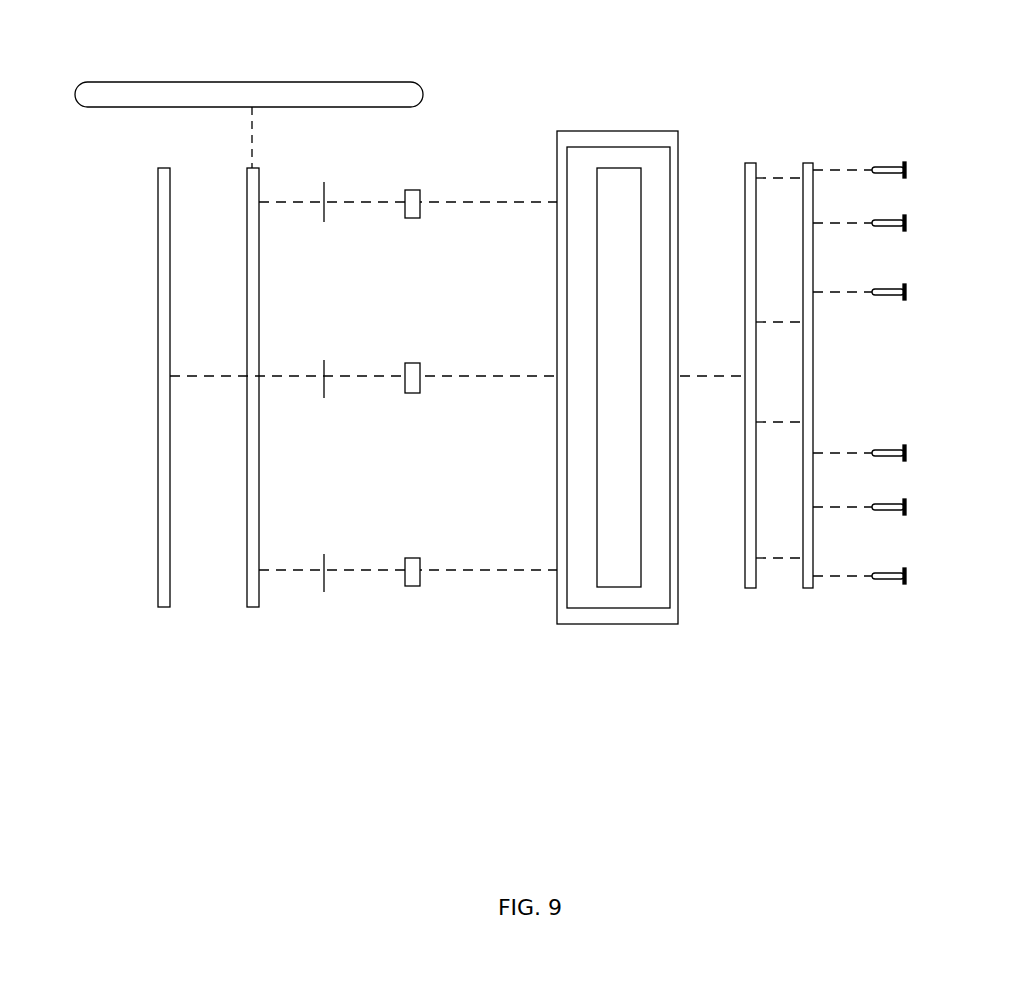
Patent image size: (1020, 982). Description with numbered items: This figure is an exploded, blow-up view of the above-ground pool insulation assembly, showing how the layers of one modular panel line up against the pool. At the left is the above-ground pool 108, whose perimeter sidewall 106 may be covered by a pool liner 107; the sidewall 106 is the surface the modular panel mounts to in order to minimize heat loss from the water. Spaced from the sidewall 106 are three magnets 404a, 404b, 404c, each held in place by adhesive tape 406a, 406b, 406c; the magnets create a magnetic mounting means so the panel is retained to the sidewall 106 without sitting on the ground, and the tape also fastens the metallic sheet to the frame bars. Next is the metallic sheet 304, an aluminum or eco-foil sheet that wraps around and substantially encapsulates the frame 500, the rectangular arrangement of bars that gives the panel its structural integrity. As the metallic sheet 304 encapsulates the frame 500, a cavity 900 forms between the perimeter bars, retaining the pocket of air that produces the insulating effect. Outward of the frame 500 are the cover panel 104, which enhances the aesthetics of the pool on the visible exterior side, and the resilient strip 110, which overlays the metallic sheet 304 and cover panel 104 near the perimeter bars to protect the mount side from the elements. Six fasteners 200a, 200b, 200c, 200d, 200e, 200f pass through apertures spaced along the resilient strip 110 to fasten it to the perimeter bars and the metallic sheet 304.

The above-ground pool 108 is at (262, 80).
The pool liner 107 is at (158, 292).
The sidewall 106 is at (259, 270).
The adhesive tape 406a is at (324, 188).
The adhesive tape 406b is at (324, 392).
The adhesive tape 406c is at (324, 586).
The magnet 404a is at (412, 190).
The magnet 404b is at (412, 363).
The magnet 404c is at (412, 558).
The metallic sheet 304 is at (688, 634).
The cavity 900 is at (627, 586).
The frame 500 is at (647, 296).
The cover panel 104 is at (750, 163).
The resilient strip 110 is at (808, 163).
The fastener 200a is at (892, 167).
The fastener 200b is at (906, 223).
The fastener 200c is at (906, 292).
The fastener 200d is at (906, 453).
The fastener 200e is at (906, 507).
The fastener 200f is at (893, 579).